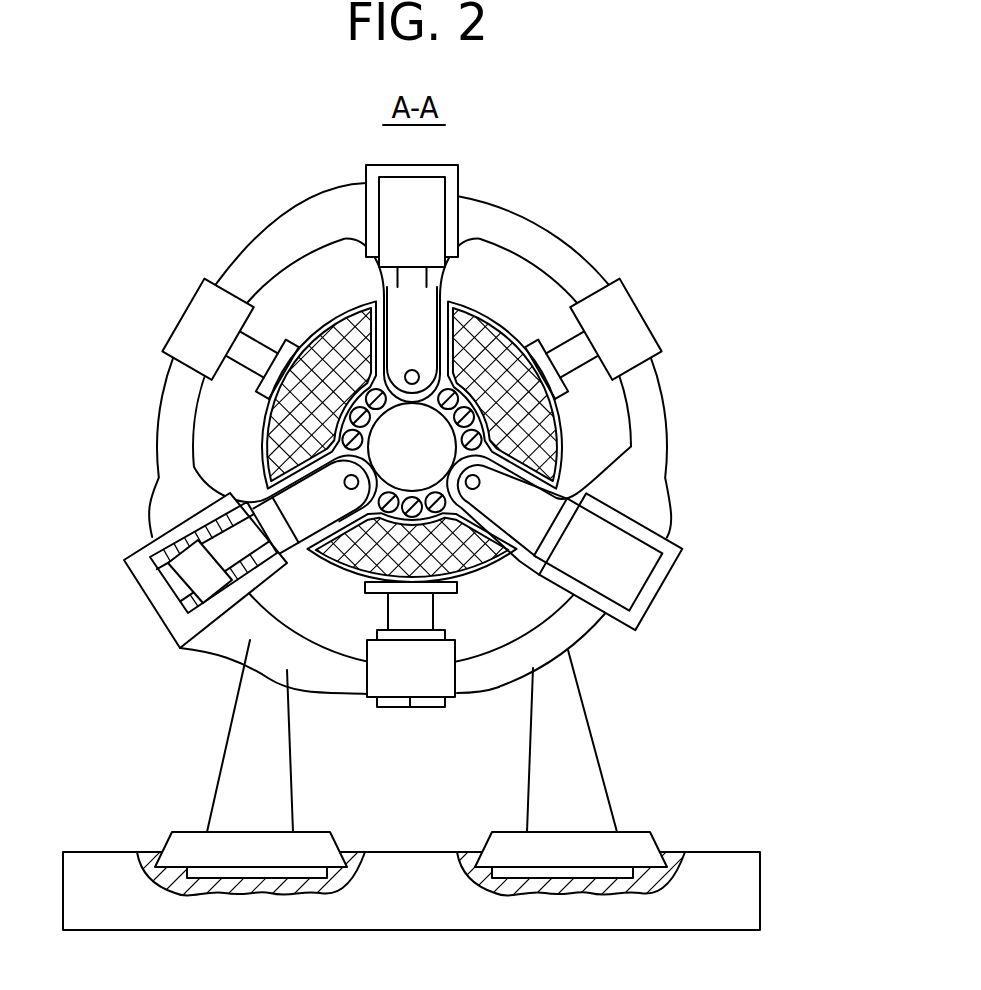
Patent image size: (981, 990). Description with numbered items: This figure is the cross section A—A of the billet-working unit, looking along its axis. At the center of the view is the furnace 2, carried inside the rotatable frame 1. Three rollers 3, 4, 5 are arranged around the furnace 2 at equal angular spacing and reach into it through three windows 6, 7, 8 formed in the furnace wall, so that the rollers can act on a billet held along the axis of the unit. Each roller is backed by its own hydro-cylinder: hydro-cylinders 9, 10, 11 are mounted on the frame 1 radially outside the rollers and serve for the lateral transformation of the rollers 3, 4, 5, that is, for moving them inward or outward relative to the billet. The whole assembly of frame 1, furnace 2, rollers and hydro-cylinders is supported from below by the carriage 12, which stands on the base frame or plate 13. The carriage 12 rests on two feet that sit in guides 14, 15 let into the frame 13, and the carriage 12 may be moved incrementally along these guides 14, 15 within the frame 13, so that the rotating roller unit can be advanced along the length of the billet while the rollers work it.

The frame 1 is at (578, 274).
The furnace 2 is at (557, 406).
The roller 3 is at (372, 308).
The roller 4 is at (447, 493).
The roller 5 is at (345, 455).
The window 6 is at (267, 497).
The window 7 is at (443, 316).
The window 8 is at (586, 497).
The hydro-cylinder 9 is at (390, 183).
The hydro-cylinder 10 is at (645, 553).
The hydro-cylinder 11 is at (180, 605).
The carriage 12 is at (557, 677).
The frame or plate 13 is at (370, 862).
The guide 14 is at (180, 847).
The guide 15 is at (620, 843).